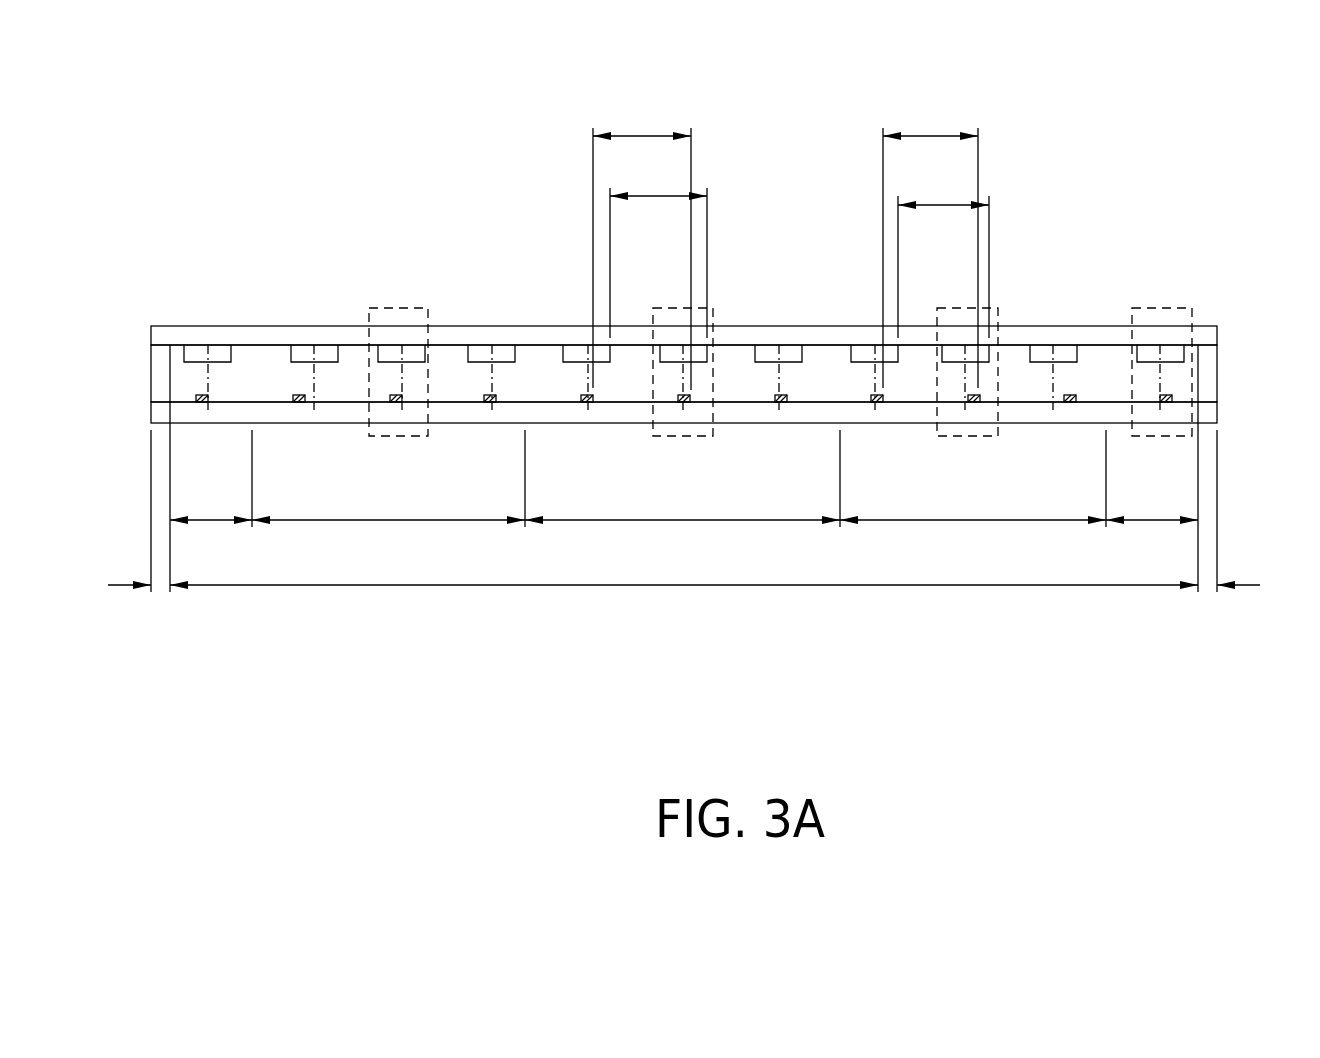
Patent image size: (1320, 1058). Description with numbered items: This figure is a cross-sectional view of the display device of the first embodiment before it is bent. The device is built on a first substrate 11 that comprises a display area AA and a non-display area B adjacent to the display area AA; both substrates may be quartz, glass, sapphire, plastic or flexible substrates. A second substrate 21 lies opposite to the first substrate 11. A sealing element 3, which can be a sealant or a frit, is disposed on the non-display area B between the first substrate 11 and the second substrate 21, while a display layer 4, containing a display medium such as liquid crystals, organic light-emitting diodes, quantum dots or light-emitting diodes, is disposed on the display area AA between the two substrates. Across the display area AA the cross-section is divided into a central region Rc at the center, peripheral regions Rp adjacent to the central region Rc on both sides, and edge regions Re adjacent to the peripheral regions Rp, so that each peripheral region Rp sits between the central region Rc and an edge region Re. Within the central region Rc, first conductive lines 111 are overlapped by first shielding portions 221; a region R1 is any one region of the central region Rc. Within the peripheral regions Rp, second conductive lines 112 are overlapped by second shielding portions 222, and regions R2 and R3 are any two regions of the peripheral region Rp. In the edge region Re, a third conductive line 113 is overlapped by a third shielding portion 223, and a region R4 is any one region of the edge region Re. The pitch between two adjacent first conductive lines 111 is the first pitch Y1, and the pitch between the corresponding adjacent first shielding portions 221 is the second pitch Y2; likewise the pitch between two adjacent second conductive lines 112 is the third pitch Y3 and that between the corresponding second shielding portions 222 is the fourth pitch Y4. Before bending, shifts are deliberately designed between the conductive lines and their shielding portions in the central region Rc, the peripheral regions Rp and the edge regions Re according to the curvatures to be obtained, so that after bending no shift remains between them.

The second substrate 21 is at (1210, 337).
The sealing element 3 is at (1207, 385).
The first substrate 11 is at (1207, 413).
The display layer 4 is at (178, 377).
The third shielding portion 223 is at (1183, 360).
The first shielding portion 221 is at (583, 353).
The second shielding portion 222 is at (415, 353).
The first conductive line 111 is at (583, 403).
The second conductive line 112 is at (392, 402).
The third conductive line 113 is at (1165, 403).
The region R1 is at (663, 308).
The region R2 is at (402, 308).
The region R3 is at (943, 308).
The region R4 is at (1162, 308).
The first pitch Y1 is at (642, 249).
The second pitch Y2 is at (658, 253).
The third pitch Y3 is at (930, 248).
The fourth pitch Y4 is at (943, 258).
The edge region Re is at (684, 478).
The peripheral region Rp is at (679, 478).
The central region Rc is at (682, 507).
The display area AA is at (684, 468).
The non-display area B is at (684, 511).